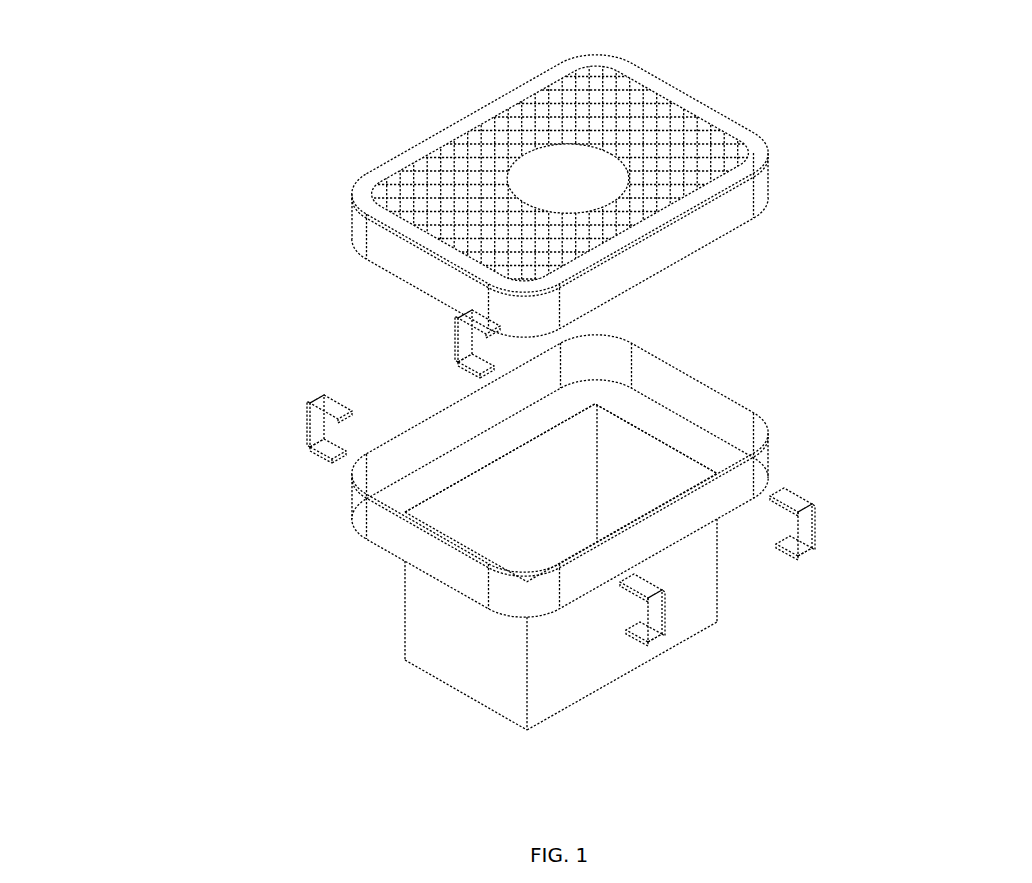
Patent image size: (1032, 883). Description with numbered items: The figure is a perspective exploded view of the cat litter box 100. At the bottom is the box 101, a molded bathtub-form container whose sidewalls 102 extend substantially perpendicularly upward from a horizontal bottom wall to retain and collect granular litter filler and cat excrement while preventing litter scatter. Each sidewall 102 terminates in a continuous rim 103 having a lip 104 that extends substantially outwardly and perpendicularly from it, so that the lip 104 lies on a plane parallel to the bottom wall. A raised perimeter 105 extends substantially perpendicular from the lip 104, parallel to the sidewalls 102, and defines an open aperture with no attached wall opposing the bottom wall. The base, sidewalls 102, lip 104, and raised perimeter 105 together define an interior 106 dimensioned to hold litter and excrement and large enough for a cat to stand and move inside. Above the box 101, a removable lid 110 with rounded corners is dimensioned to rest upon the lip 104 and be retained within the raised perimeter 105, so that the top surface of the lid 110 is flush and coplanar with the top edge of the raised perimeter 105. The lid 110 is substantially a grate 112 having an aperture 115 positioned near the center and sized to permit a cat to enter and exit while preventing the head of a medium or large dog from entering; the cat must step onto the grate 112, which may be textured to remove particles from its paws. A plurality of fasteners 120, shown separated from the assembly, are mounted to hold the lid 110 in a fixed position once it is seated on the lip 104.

The cat litter box 100 is at (143, 389).
The box 101 is at (423, 670).
The sidewalls 102 is at (599, 653).
The continuous rim 103 is at (685, 458).
The lip 104 is at (642, 402).
The raised perimeter 105 is at (617, 342).
The interior 106 is at (465, 517).
The removable lid 110 is at (407, 155).
The grate 112 is at (558, 112).
The aperture 115 is at (600, 173).
The fasteners 120 is at (467, 340).